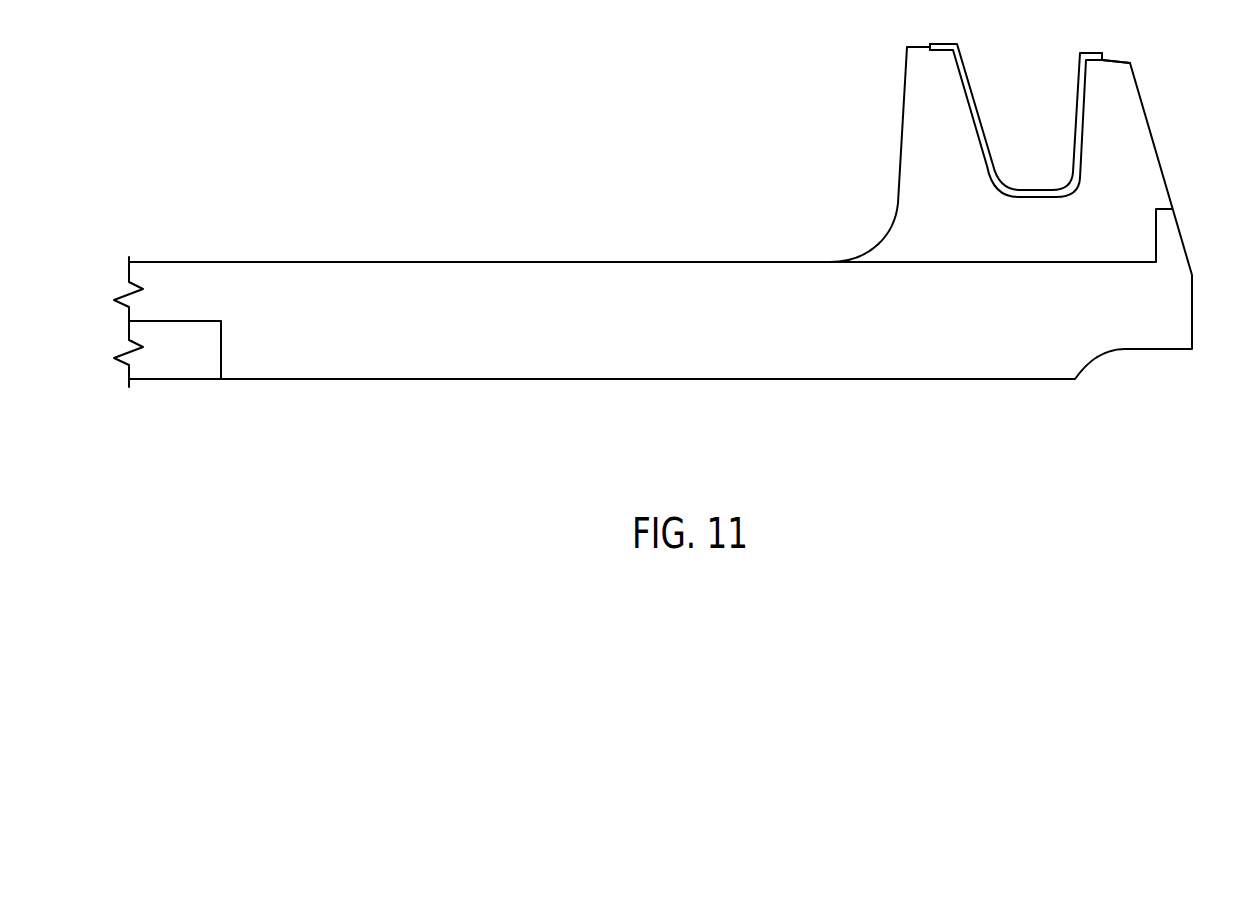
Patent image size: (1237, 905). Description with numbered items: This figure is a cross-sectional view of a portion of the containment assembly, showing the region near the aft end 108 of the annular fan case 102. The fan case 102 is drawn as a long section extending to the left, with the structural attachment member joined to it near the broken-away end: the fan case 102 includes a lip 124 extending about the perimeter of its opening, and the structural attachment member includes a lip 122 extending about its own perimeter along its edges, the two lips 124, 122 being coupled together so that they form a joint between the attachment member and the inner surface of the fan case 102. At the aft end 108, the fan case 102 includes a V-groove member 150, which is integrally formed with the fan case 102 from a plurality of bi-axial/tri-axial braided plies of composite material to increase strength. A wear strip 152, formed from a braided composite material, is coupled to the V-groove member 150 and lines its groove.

The aft end 108 is at (1086, 418).
The annular fan case 102 is at (628, 277).
The lip 124 is at (178, 277).
The lip 122 is at (178, 365).
The V-groove member 150 is at (1123, 138).
The wear strip 152 is at (1077, 93).